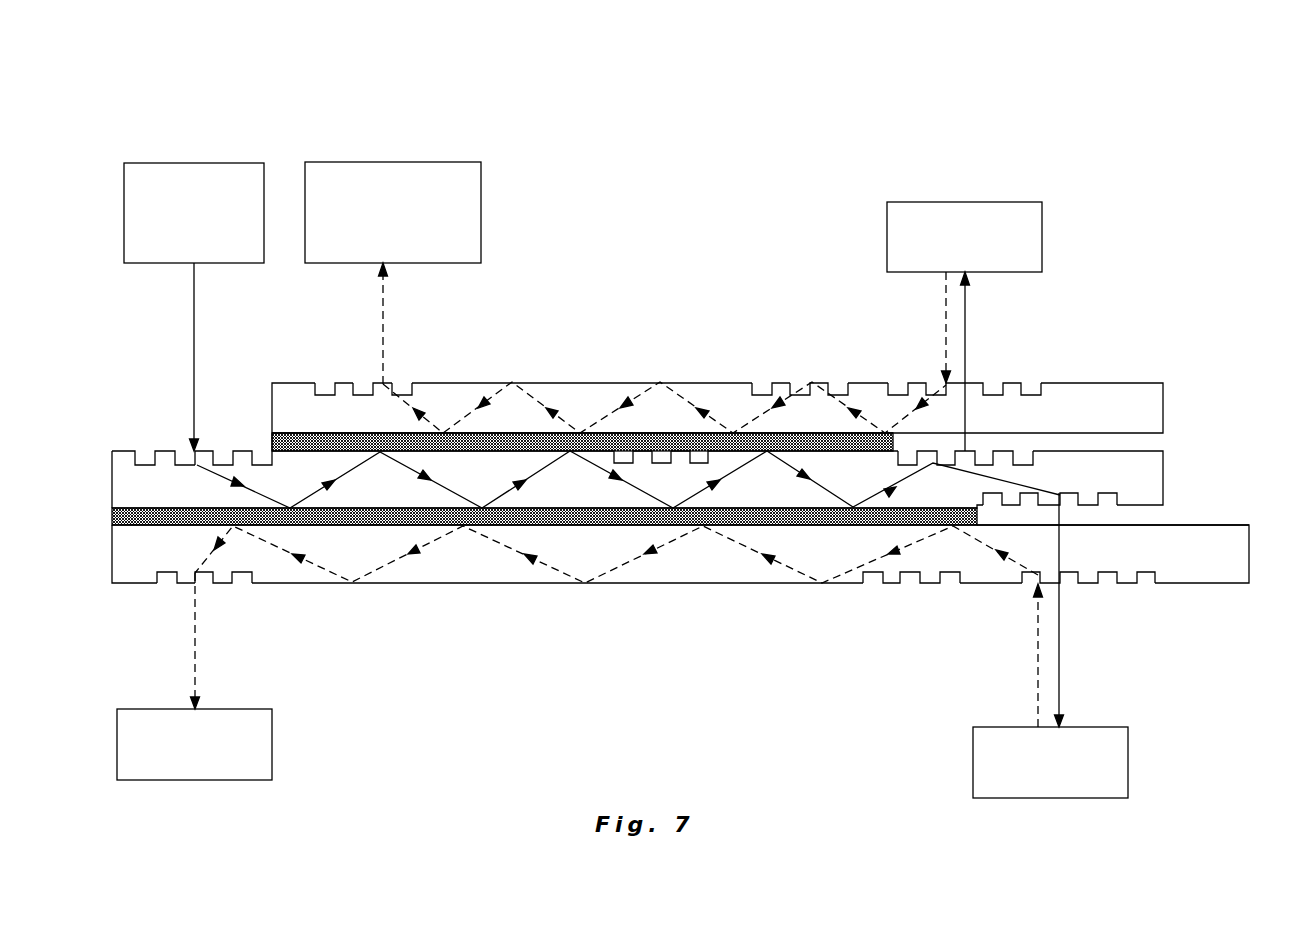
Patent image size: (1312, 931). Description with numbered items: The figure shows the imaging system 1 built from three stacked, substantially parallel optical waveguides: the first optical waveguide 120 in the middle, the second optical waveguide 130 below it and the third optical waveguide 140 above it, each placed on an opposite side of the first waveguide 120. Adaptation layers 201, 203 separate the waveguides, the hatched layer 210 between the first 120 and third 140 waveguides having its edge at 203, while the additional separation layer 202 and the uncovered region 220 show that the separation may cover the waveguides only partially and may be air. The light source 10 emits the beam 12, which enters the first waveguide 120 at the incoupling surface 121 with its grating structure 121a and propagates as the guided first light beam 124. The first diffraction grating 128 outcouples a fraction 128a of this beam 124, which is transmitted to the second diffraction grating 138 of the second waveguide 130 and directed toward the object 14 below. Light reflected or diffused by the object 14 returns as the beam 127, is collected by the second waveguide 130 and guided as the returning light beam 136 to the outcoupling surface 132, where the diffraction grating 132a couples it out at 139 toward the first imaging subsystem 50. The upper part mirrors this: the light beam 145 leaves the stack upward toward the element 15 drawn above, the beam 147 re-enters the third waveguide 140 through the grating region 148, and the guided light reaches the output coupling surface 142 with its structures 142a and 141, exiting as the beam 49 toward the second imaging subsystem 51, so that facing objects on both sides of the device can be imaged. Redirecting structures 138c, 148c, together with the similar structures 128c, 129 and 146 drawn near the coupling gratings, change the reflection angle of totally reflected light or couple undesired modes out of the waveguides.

The imaging system 1 is at (676, 247).
The light source 10 is at (143, 228).
The input light beam 12 is at (197, 289).
The object 14 is at (1100, 770).
The light source 15 is at (1015, 243).
The output light beam 49 is at (385, 315).
The first imaging subsystem 50 is at (243, 752).
The second imaging subsystem 51 is at (467, 222).
The first optical waveguide 120 is at (118, 485).
The incoupling surface 121 is at (177, 424).
The grating structure 121a is at (162, 450).
The first light beam 124 is at (260, 492).
The light beam 127 is at (1037, 677).
The first diffraction grating 128 is at (1118, 502).
The outcoupled fraction of the first light beam 128a is at (1060, 643).
The coupling grating 128c is at (706, 464).
The coupling grating 129 is at (1038, 464).
The second optical waveguide 130 is at (468, 572).
The outcoupling surface 132 is at (158, 606).
The diffraction grating 132a is at (235, 585).
The returning light beam 136 is at (648, 550).
The second diffraction grating 138 is at (1120, 583).
The redirecting structure 138c is at (893, 587).
The optical waveguide 139 is at (197, 650).
The third optical waveguide 140 is at (1135, 413).
The output coupling grating 141 is at (410, 372).
The output coupling surface 142 is at (341, 360).
The grating structure 142a is at (377, 380).
The light beam 145 is at (966, 323).
The coupling grating 146 is at (683, 383).
The input light beam 147 is at (945, 322).
The input coupling grating 148 is at (993, 378).
The redirecting structure 148c is at (815, 383).
The adaptation layer 201 is at (113, 518).
The additional separation layer 202 is at (630, 433).
The adaptation layer 203 is at (272, 435).
The intermediate layer 210 is at (732, 394).
The gap 220 is at (1140, 515).